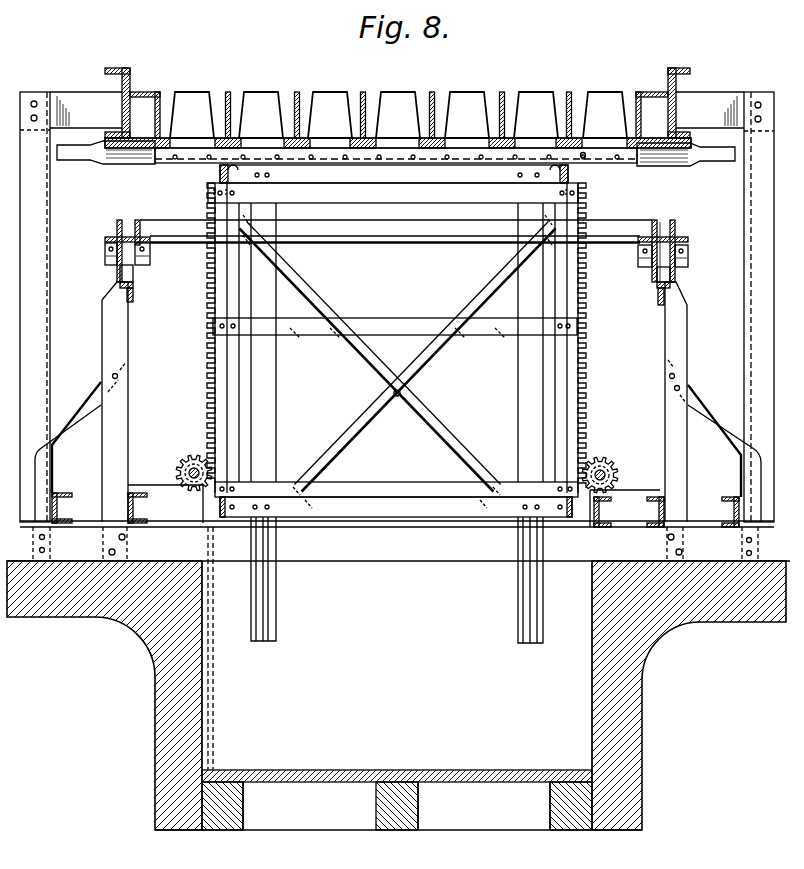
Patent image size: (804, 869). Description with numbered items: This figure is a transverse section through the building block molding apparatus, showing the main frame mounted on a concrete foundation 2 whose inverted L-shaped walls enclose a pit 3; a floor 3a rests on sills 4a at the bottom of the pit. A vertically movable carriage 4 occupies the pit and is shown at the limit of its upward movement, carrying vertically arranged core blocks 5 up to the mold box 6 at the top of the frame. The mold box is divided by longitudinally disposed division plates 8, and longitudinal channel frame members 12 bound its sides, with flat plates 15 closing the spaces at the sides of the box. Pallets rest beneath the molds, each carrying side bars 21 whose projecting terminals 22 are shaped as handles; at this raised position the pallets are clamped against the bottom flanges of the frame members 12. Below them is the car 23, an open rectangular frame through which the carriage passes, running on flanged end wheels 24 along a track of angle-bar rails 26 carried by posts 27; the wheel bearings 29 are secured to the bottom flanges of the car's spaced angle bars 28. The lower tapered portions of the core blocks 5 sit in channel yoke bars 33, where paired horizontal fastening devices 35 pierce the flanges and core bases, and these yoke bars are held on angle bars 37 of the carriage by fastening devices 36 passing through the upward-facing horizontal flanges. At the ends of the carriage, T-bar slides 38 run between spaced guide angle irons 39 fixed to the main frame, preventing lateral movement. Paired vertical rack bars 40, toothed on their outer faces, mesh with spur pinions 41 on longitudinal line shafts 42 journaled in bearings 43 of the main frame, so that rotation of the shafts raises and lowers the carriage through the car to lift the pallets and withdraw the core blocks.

The foundation 2 is at (108, 710).
The pit 3 is at (397, 665).
The floor 3a is at (353, 770).
The carriage 4 is at (413, 520).
The sills 4a is at (252, 810).
The core blocks 5 is at (392, 96).
The mold box 6 is at (513, 92).
The division plates 8 is at (297, 90).
The frame members 12 is at (131, 72).
The plates 15 is at (158, 92).
The longitudinal bars 21 is at (120, 164).
The terminals 22 is at (720, 163).
The car 23 is at (645, 220).
The end wheels 24 is at (656, 279).
The rails 26 is at (133, 299).
The posts 27 is at (127, 437).
The angle bars 28 is at (676, 233).
The bearings 29 is at (689, 266).
The channel yoke bars 33 is at (165, 163).
The fastening devices 35 is at (588, 150).
The fastening devices 36 is at (580, 176).
The angle bars 37 is at (218, 172).
The slides 38 is at (280, 614).
The angle irons 39 is at (268, 441).
The rack bars 40 is at (207, 356).
The pinions 41 is at (598, 456).
The line shafts 42 is at (611, 471).
The bearings 43 is at (645, 482).